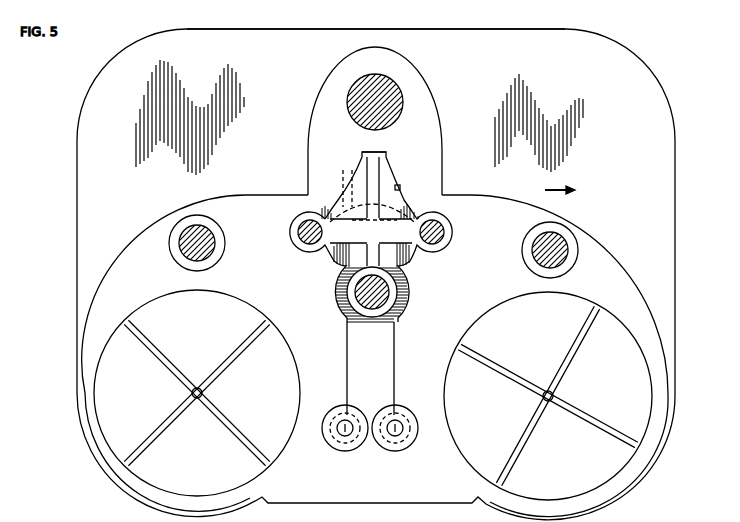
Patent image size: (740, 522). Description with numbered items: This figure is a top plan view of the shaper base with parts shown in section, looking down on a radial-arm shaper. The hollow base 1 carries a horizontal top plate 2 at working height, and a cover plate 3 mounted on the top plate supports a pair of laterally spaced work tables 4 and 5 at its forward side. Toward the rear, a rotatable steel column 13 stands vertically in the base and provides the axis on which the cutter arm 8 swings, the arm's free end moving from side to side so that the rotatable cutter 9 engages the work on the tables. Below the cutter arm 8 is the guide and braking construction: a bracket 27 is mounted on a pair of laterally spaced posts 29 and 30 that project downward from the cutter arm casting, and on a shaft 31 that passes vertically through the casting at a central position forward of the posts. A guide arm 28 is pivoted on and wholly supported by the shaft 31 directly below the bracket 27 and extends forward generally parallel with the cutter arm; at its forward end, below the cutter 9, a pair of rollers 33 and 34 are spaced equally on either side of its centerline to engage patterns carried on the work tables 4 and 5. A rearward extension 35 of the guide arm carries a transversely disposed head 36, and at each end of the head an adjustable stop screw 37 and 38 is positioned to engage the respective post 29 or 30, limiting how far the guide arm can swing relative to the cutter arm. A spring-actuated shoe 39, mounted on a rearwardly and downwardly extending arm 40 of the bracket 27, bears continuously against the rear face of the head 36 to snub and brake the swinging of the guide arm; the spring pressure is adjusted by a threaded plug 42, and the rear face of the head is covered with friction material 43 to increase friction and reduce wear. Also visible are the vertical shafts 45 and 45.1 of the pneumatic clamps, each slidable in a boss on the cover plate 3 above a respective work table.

The hollow base 1 is at (670, 257).
The horizontal top plate 2 is at (665, 213).
The cover plate 3 is at (610, 267).
The work table 4 is at (108, 430).
The work table 5 is at (645, 387).
The cutter arm 8 is at (366, 448).
The rotatable cutter 9 is at (565, 194).
The column 13 is at (388, 98).
The bracket 27 is at (418, 262).
The guide arm 28 is at (388, 368).
The post 29 is at (290, 232).
The post 30 is at (444, 229).
The shaft 31 is at (400, 301).
The roller 33 is at (335, 448).
The roller 34 is at (406, 447).
The rearward extension 35 is at (323, 260).
The head 36 is at (400, 202).
The stop screw 37 is at (348, 198).
The stop screw 38 is at (422, 210).
The shoe 39 is at (399, 185).
The arm 40 is at (382, 174).
The threaded plug 42 is at (366, 153).
The friction material 43 is at (364, 187).
The shaft 45 is at (563, 238).
The left mounting hole 45.1 is at (190, 233).